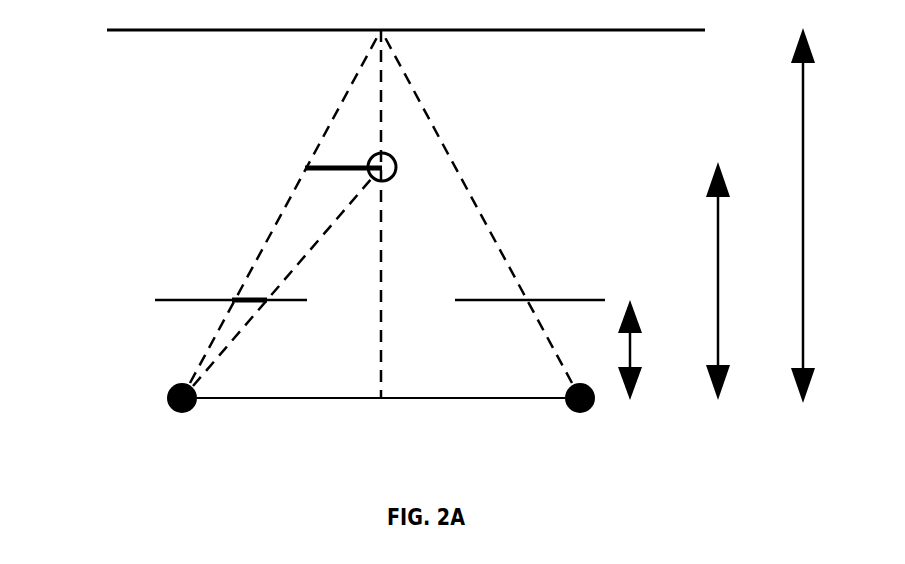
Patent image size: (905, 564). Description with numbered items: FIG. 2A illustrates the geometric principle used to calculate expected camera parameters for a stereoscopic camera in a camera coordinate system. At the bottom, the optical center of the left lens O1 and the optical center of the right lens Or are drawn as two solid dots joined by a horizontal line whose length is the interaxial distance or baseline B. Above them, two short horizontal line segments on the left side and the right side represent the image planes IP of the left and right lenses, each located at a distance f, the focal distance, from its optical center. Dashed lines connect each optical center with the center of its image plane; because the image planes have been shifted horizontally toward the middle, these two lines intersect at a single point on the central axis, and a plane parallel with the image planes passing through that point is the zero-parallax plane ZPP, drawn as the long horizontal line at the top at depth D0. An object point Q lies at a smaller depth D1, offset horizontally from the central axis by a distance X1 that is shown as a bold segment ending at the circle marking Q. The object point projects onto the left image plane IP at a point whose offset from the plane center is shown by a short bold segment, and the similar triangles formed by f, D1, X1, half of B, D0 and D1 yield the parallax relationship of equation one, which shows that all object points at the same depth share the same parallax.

The zero-parallax plane ZPP is at (369, 26).
The image plane IP is at (360, 298).
The interaxial distance B is at (381, 242).
The optical center of left lens O1 is at (249, 243).
The optical center of right lens Or is at (488, 242).
The object point Q is at (396, 146).
The horizontal offset of object point X1 is at (317, 150).
The focal distance f is at (639, 350).
The depth of object point D1 is at (745, 281).
The depth of zero-parallax plane D0 is at (833, 215).